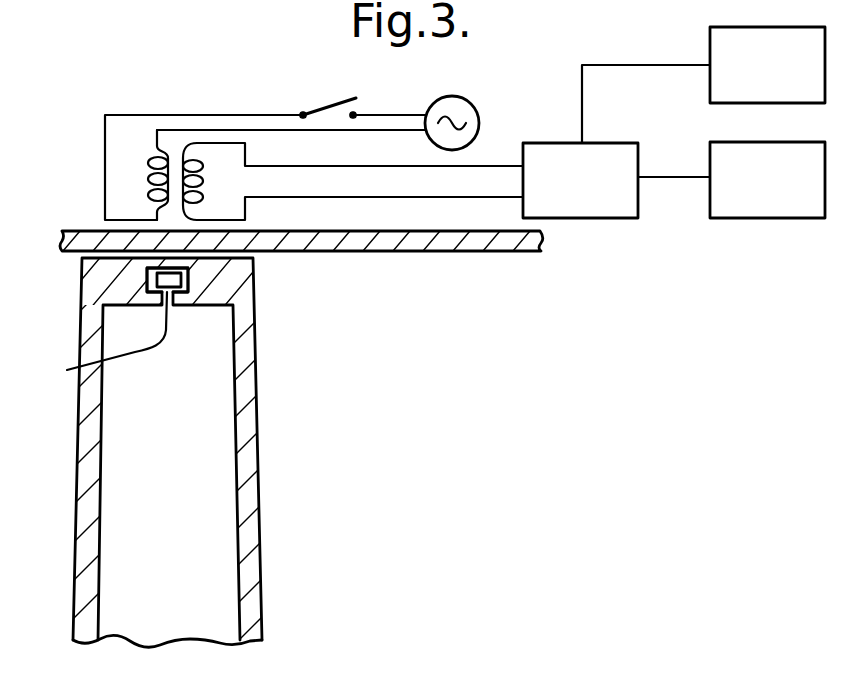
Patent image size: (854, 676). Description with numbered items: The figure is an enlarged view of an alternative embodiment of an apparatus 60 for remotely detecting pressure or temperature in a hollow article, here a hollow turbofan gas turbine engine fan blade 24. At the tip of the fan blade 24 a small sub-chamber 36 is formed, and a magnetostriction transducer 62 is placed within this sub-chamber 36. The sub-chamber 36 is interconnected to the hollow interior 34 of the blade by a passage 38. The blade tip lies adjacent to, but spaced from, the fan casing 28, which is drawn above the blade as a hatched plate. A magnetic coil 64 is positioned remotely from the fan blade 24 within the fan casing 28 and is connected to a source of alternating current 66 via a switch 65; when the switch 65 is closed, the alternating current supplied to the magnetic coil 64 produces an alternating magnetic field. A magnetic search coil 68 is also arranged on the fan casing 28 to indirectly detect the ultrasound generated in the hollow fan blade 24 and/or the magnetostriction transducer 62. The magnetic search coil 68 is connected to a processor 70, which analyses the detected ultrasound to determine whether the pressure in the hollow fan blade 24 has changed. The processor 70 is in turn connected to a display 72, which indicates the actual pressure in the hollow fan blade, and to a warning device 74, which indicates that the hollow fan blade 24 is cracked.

The fan blade 24 is at (250, 383).
The fan casing 28 is at (403, 240).
The hollow interior 34 is at (210, 488).
The sub-chamber 36 is at (181, 282).
The passage 38 is at (98, 345).
The apparatus 60 is at (379, 108).
The magnetostriction transducer 62 is at (157, 279).
The magnetic coil 64 is at (148, 172).
The switch 65 is at (324, 106).
The source of alternating current 66 is at (462, 106).
The magnetic search coil 68 is at (212, 178).
The processor 70 is at (543, 157).
The display 72 is at (723, 160).
The warning device 74 is at (722, 42).